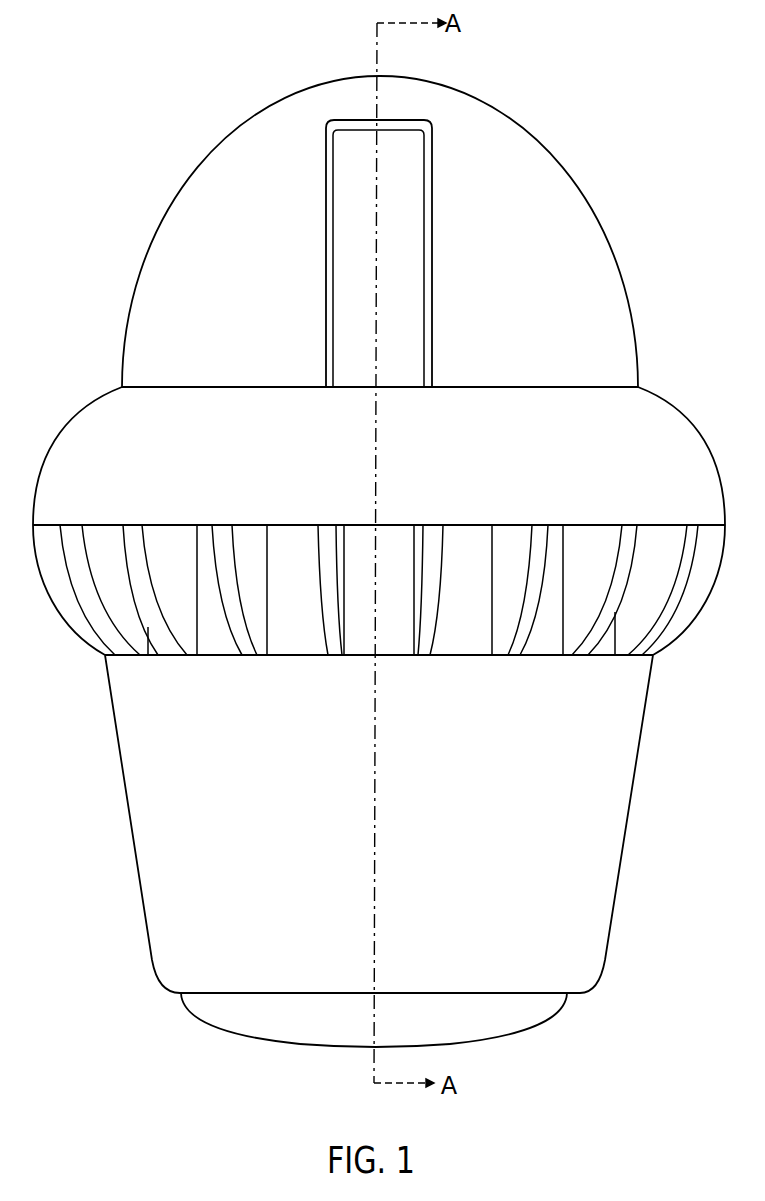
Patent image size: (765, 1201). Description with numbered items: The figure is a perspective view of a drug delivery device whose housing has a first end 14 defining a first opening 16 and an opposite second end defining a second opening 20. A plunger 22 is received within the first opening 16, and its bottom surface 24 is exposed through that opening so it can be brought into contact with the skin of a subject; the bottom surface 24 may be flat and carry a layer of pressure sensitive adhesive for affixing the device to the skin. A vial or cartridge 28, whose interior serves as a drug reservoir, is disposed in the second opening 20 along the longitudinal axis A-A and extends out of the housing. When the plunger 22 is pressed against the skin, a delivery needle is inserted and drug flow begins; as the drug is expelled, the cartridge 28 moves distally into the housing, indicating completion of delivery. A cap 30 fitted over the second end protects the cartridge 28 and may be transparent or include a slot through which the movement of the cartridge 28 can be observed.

The first end 14 is at (600, 930).
The first opening 16 is at (578, 997).
The second opening 20 is at (326, 362).
The plunger 22 is at (300, 1032).
The bottom surface 24 is at (368, 1048).
The cartridge 28 is at (344, 262).
The cap 30 is at (272, 115).